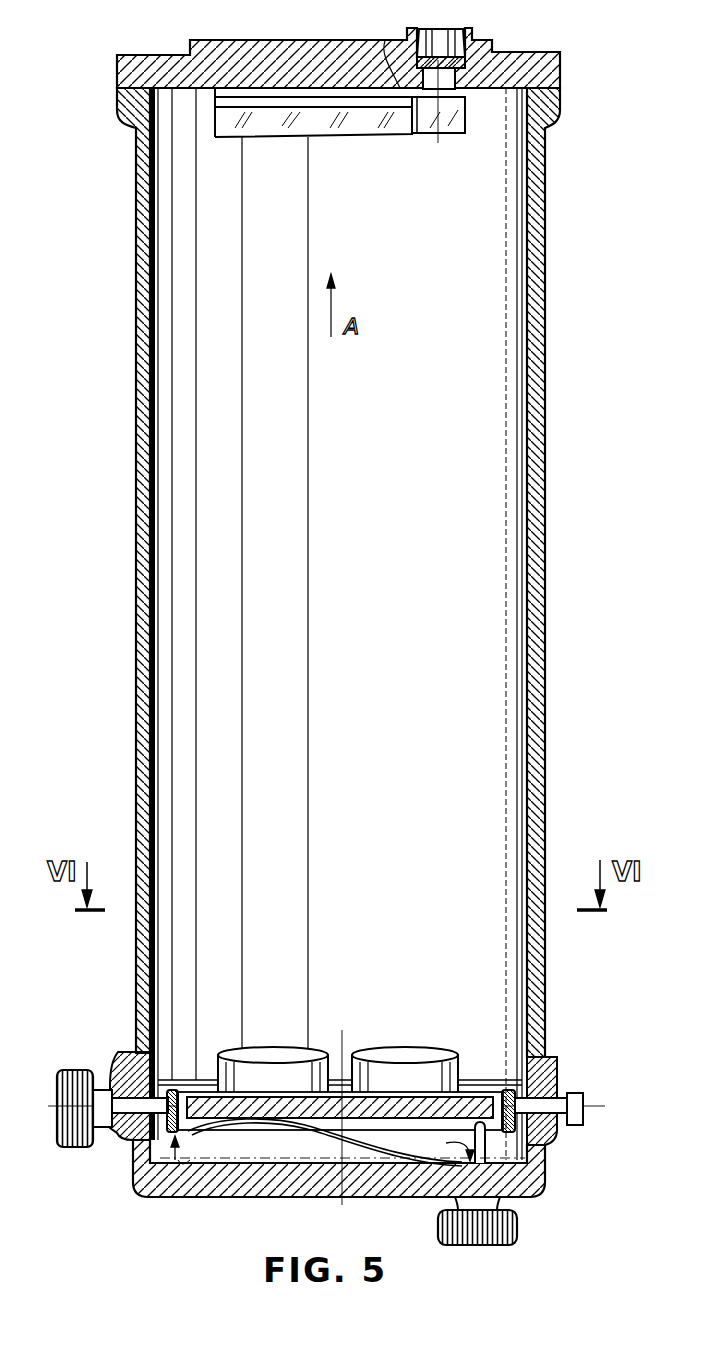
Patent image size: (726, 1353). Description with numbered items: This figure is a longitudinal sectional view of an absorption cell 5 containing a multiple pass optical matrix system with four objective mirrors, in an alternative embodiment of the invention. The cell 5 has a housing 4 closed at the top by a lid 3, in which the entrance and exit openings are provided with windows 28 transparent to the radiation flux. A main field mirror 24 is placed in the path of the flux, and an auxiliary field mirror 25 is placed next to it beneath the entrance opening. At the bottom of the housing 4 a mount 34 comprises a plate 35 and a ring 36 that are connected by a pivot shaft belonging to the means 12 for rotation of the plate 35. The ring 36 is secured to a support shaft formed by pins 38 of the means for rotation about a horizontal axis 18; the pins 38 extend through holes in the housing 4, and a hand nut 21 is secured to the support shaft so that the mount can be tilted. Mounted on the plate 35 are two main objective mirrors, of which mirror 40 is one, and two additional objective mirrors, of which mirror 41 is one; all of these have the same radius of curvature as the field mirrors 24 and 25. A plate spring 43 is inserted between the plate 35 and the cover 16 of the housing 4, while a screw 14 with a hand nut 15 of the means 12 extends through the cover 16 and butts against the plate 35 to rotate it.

The lid 3 is at (269, 44).
The housing 4 is at (540, 735).
The cell 5 is at (128, 678).
The means for rotation of the plate 12 is at (442, 1152).
The screw 14 is at (487, 1148).
The hand nut 15 is at (517, 1222).
The cover 16 is at (535, 1172).
The horizontal axis 18 is at (584, 1105).
The hand nut 21 is at (73, 1149).
The main field mirror 24 is at (212, 125).
The auxiliary field mirror 25 is at (455, 133).
The window 28 is at (447, 31).
The mount 34 is at (194, 1151).
The plate 35 is at (459, 1100).
The ring 36 is at (172, 1090).
The pins 38 is at (118, 1090).
The main objective mirror 40 is at (272, 1050).
The additional objective mirror 41 is at (388, 1050).
The plate spring 43 is at (322, 1132).